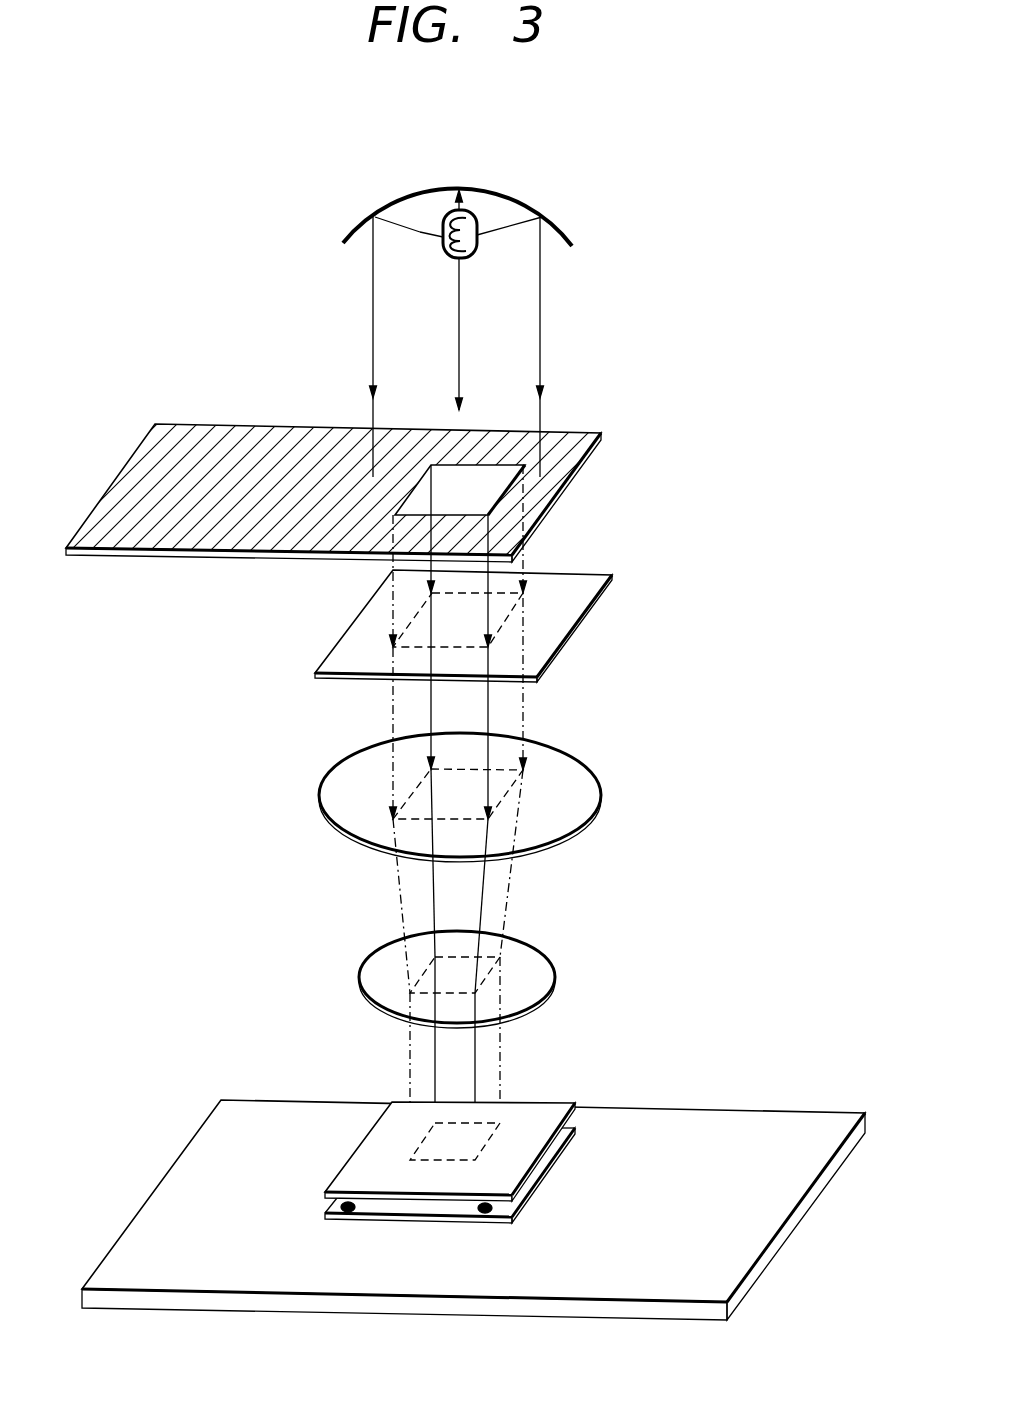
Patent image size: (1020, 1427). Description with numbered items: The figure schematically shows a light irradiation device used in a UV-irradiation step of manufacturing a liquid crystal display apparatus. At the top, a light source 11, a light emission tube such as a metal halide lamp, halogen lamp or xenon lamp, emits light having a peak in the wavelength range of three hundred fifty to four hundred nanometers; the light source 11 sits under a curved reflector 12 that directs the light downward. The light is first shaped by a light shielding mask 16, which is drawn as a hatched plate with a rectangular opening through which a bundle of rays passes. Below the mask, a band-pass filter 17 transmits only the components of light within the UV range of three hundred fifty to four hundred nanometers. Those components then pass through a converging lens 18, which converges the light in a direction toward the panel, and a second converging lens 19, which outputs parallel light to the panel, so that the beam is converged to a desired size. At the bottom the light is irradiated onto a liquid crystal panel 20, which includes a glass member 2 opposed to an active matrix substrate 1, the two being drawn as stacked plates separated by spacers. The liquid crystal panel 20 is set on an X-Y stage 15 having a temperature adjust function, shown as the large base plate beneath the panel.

The light source 11 is at (477, 218).
The reflector 12 is at (570, 237).
The light shielding mask 16 is at (568, 487).
The band-pass filter 17 is at (580, 630).
The converging lens 18 is at (595, 818).
The converging lens 19 is at (552, 990).
The X-Y stage 15 is at (797, 1228).
The liquid crystal panel 20 is at (503, 1162).
The glass member 2 is at (552, 1117).
The active matrix substrate 1 is at (558, 1157).